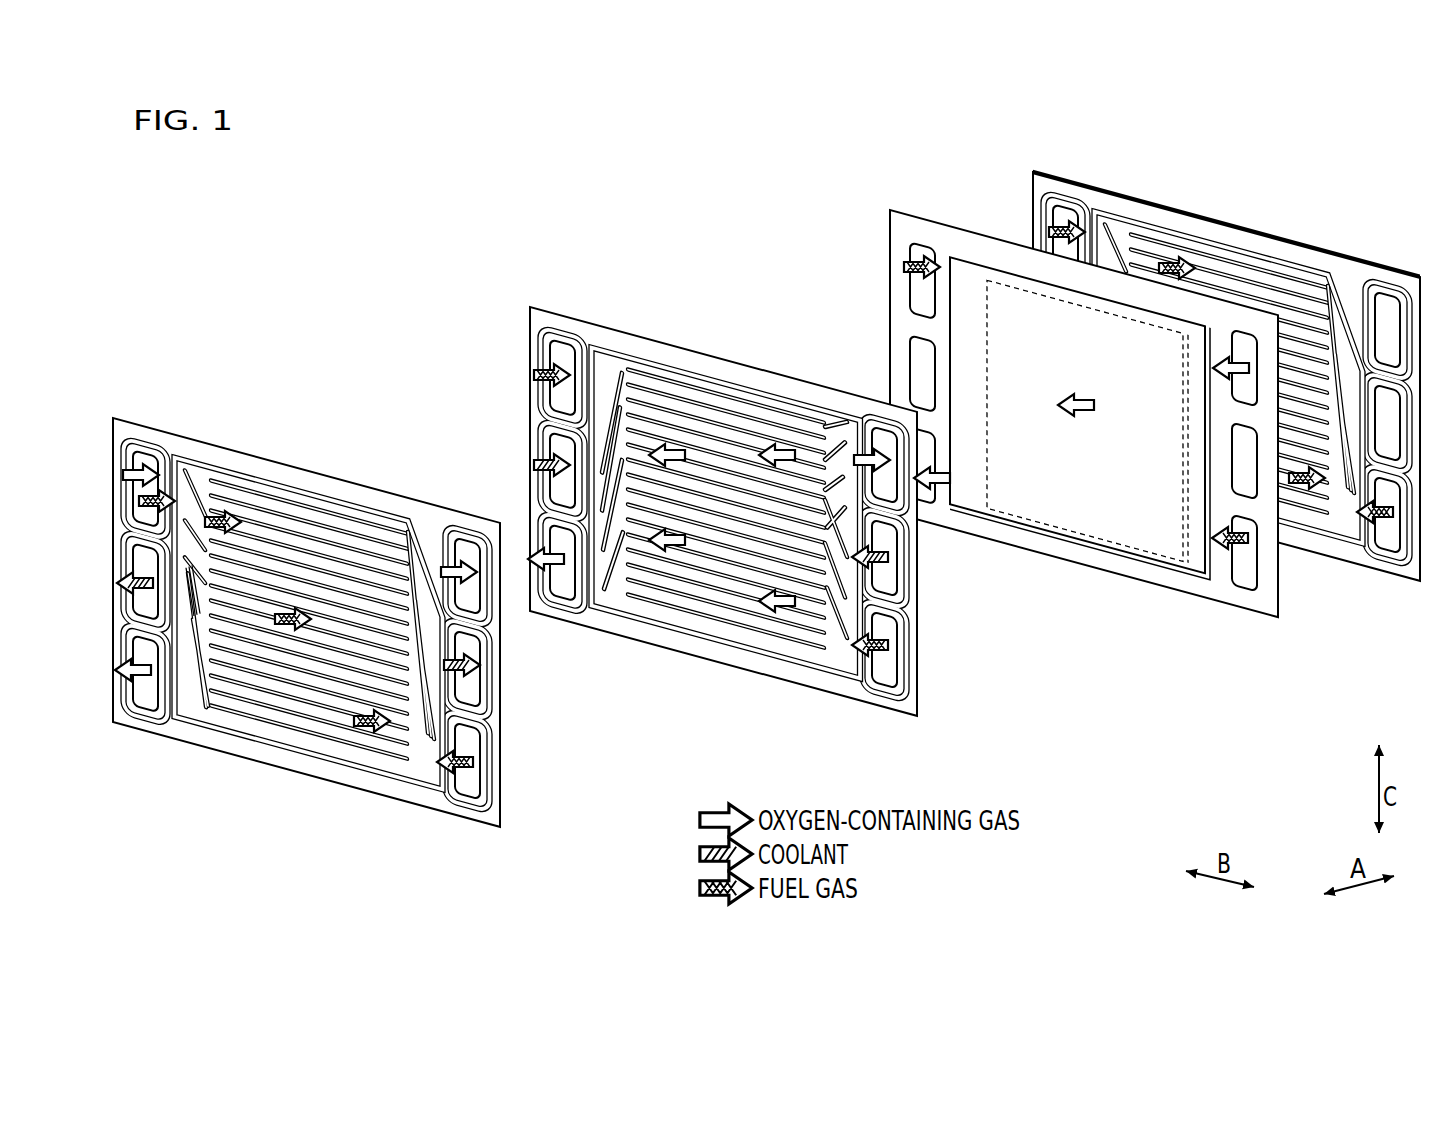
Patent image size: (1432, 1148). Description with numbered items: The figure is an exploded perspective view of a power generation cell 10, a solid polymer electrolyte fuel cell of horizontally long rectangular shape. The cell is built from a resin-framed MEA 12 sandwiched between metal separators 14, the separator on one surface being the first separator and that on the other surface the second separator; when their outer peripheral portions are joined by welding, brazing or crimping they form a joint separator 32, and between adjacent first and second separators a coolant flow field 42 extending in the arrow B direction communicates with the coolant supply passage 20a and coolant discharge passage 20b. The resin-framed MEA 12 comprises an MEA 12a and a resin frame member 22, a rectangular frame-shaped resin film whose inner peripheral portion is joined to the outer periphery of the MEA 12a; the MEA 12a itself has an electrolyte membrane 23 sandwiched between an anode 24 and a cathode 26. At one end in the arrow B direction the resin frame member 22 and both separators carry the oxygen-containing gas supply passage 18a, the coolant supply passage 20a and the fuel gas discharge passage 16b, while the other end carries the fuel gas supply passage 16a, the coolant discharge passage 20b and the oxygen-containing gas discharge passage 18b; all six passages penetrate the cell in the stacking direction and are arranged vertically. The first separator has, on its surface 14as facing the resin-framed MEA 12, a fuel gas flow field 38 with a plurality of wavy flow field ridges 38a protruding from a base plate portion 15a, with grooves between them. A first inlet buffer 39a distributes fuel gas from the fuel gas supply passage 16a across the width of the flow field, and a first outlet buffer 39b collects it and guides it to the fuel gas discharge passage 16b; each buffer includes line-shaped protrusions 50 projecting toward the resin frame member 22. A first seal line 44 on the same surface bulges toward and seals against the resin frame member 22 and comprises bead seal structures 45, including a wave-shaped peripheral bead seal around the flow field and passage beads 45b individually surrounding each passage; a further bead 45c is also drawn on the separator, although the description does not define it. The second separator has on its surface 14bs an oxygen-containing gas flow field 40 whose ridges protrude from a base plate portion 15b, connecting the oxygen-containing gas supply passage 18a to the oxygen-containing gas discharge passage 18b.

The power generation cell 10 is at (676, 228).
The resin-framed MEA 12 is at (1140, 628).
The MEA 12a is at (1090, 512).
The separator 14 is at (113, 410).
The surface of the first separator 14as is at (176, 458).
The surface of the second separator 14bs is at (835, 657).
The base plate portion 15a is at (327, 773).
The base plate portion 15b is at (588, 327).
The fuel gas supply passage 16a is at (134, 452).
The fuel gas discharge passage 16b is at (470, 783).
The oxygen-containing gas supply passage 18a is at (465, 548).
The oxygen-containing gas discharge passage 18b is at (145, 692).
The coolant supply passage 20a is at (473, 688).
The coolant discharge passage 20b is at (553, 448).
The resin frame member 22 is at (1135, 565).
The electrolyte membrane 23 is at (1043, 500).
The anode 24 is at (1165, 557).
The cathode 26 is at (990, 517).
The joint separator 32 is at (557, 230).
The fuel gas flow field 38 is at (243, 710).
The flow field ridges 38a is at (273, 697).
The first inlet buffer 39a is at (205, 458).
The first outlet buffer 39b is at (405, 515).
The oxygen-containing gas flow field 40 is at (677, 407).
The coolant flow field 42 is at (648, 385).
The first seal line 44 is at (470, 878).
The bead seal structures 45 is at (1403, 150).
The passage beads 45b is at (153, 448).
The bead seal 45c is at (1367, 437).
The protrusions 50 is at (207, 488).